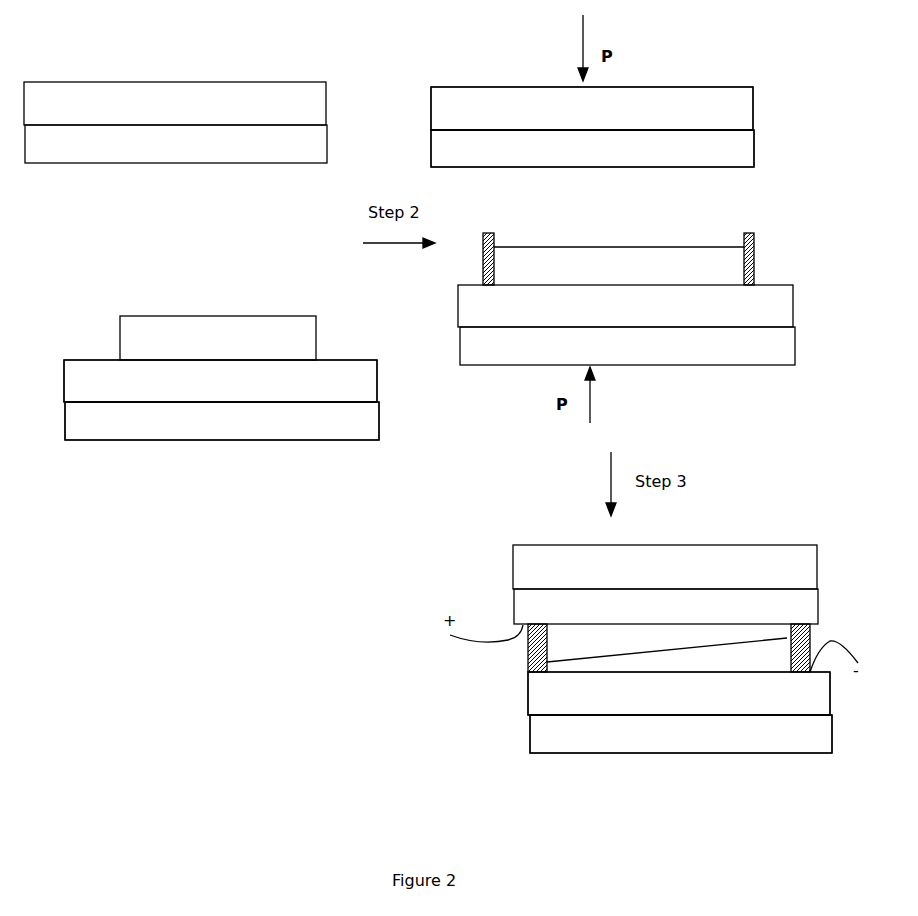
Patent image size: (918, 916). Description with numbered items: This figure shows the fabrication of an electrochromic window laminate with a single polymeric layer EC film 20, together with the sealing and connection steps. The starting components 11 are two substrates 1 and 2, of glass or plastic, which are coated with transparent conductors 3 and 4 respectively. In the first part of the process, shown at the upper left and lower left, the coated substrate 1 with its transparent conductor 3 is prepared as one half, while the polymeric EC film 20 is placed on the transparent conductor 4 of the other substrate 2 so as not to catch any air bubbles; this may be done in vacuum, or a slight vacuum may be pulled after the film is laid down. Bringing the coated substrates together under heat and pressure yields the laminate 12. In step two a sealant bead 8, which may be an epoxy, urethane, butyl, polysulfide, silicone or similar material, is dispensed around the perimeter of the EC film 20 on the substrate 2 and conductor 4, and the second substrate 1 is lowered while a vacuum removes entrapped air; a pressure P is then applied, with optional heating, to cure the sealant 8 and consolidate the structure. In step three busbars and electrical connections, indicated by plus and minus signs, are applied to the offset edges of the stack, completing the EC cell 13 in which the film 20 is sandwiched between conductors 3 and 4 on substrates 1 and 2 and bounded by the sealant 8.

The substrate 1 is at (420, 335).
The substrate 2 is at (448, 540).
The transparent conductor 3 is at (421, 374).
The transparent conductor 4 is at (447, 500).
The sealant bead 8 is at (754, 247).
The substrates coated with transparent conductors 11 is at (99, 470).
The laminate 12 is at (684, 65).
The EC cell 13 is at (457, 703).
The polymeric layer EC film 20 is at (453, 454).